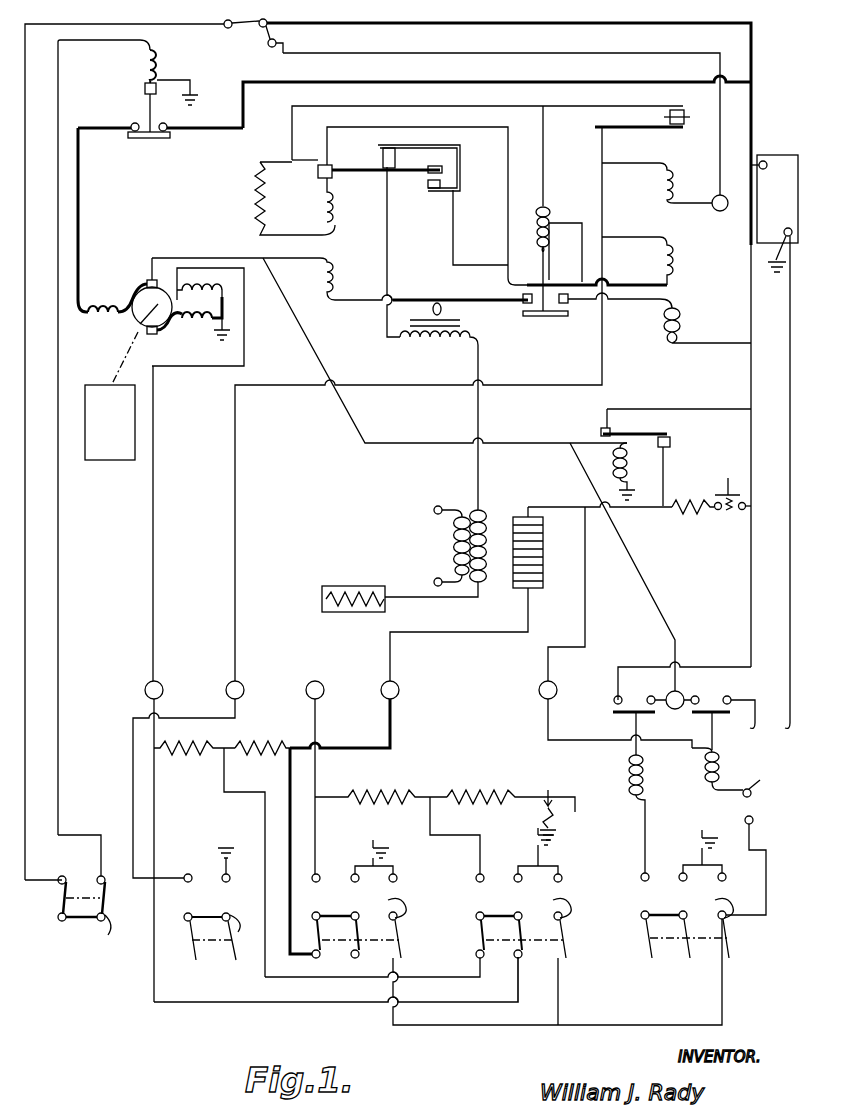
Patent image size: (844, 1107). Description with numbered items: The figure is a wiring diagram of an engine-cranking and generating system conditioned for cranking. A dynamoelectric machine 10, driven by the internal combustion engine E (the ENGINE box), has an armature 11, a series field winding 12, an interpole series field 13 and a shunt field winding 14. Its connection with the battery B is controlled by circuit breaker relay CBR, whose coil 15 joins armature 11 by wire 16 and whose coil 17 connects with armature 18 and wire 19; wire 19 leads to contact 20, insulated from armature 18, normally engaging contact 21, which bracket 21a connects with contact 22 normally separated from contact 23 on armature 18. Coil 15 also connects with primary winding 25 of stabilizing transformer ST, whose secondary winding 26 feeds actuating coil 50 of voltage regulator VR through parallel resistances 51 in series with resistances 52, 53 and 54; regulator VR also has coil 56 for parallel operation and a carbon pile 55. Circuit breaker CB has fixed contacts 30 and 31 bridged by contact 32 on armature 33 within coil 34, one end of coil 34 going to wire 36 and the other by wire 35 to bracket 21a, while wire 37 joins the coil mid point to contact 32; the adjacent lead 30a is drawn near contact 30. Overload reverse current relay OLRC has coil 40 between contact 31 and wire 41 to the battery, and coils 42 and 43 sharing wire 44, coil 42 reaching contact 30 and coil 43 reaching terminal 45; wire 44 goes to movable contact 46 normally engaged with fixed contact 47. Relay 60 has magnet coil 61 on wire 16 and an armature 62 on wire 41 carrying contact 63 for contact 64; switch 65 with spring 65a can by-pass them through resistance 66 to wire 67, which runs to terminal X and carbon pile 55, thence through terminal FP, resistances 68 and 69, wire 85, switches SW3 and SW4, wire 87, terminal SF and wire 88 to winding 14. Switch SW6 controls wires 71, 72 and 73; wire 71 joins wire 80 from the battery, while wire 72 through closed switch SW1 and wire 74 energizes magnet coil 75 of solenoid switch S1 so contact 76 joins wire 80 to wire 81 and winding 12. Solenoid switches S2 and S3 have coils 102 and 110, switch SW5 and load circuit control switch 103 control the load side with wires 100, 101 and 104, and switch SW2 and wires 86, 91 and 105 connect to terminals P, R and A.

The dynamoelectric machine 10 is at (121, 242).
The armature 11 is at (137, 326).
The series field winding 12 is at (98, 320).
The interpole series field 13 is at (207, 330).
The shunt series field winding 14 is at (198, 317).
The coil 15 is at (335, 275).
The wire 16 is at (242, 257).
The coil 17 is at (321, 210).
The armature 18 is at (318, 176).
The wire 19 is at (255, 197).
The contact 20 is at (395, 160).
The contact 21 is at (382, 157).
The bracket 21a is at (458, 160).
The contact 22 is at (428, 186).
The contact 23 is at (428, 172).
The primary winding 25 is at (441, 310).
The secondary winding 26 is at (432, 346).
The fixed contact 30 is at (522, 305).
The conductor 30a is at (508, 198).
The fixed contact 31 is at (568, 292).
The bridging contact 32 is at (530, 318).
The armature 33 is at (536, 235).
The coil 34 is at (548, 207).
The wire 35 is at (454, 234).
The wire 36 is at (429, 108).
The wire 37 is at (583, 238).
The coil 40 is at (681, 316).
The wire 41 is at (750, 297).
The coil 42 is at (674, 260).
The coil 43 is at (674, 185).
The wire 44 is at (286, 386).
The terminal 45 is at (715, 210).
The movable contact 46 is at (686, 114).
The fixed contact 47 is at (680, 110).
The actuating coil 50 is at (485, 512).
The parallel resistances 51 is at (366, 585).
The resistance 52 is at (390, 790).
The resistance 53 is at (499, 789).
The resistance 54 is at (556, 818).
The carbon pile 55 is at (544, 548).
The coil 56 is at (452, 538).
The relay 60 is at (685, 477).
The magnet coil 61 is at (618, 460).
The armature 62 is at (643, 434).
The contact 63 is at (670, 442).
The contact 64 is at (678, 475).
The switch 65 is at (733, 483).
The spring 65a is at (727, 515).
The resistance 66 is at (688, 515).
The wire 67 is at (642, 504).
The resistance 68 is at (278, 743).
The resistance 69 is at (202, 748).
The wire 71 is at (360, 26).
The wire 72 is at (224, 27).
The wire 73 is at (330, 55).
The wire 74 is at (59, 73).
The magnet coil 75 is at (162, 65).
The contact 76 is at (150, 140).
The wire 80 is at (314, 84).
The wire 81 is at (79, 195).
The wire 85 is at (373, 748).
The conductor 86 is at (442, 977).
The wire 87 is at (153, 994).
The wire 88 is at (152, 540).
The conductor 91 is at (264, 824).
The conductor 100 is at (752, 728).
The conductor 101 is at (788, 735).
The coil 102 is at (710, 795).
The load circuit control switch 103 is at (755, 805).
The conductor 104 is at (767, 878).
The conductor 105 is at (392, 1014).
The coil 110 is at (644, 768).
The solenoid switch S1 is at (133, 98).
The solenoid switch S2 is at (726, 731).
The solenoid switch S3 is at (616, 744).
The switch SW1 is at (84, 916).
The switch SW2 is at (212, 904).
The switch SW3 is at (359, 899).
The switch SW4 is at (523, 893).
The switch SW5 is at (687, 894).
The switch SW6 is at (253, 36).
The battery B is at (777, 153).
The internal combustion engine E is at (122, 462).
The engine ENGINE is at (110, 422).
The circuit breaker CB is at (597, 309).
The circuit breaker relay CBR is at (425, 311).
The stabilizing transformer ST is at (416, 252).
The voltage regulator VR is at (445, 533).
The overload reverse current relay OLRC is at (665, 363).
The terminal SF is at (145, 688).
The terminal P is at (226, 687).
The terminal R is at (306, 688).
The terminal FP is at (381, 688).
The terminal X is at (539, 689).
The terminal A is at (684, 696).